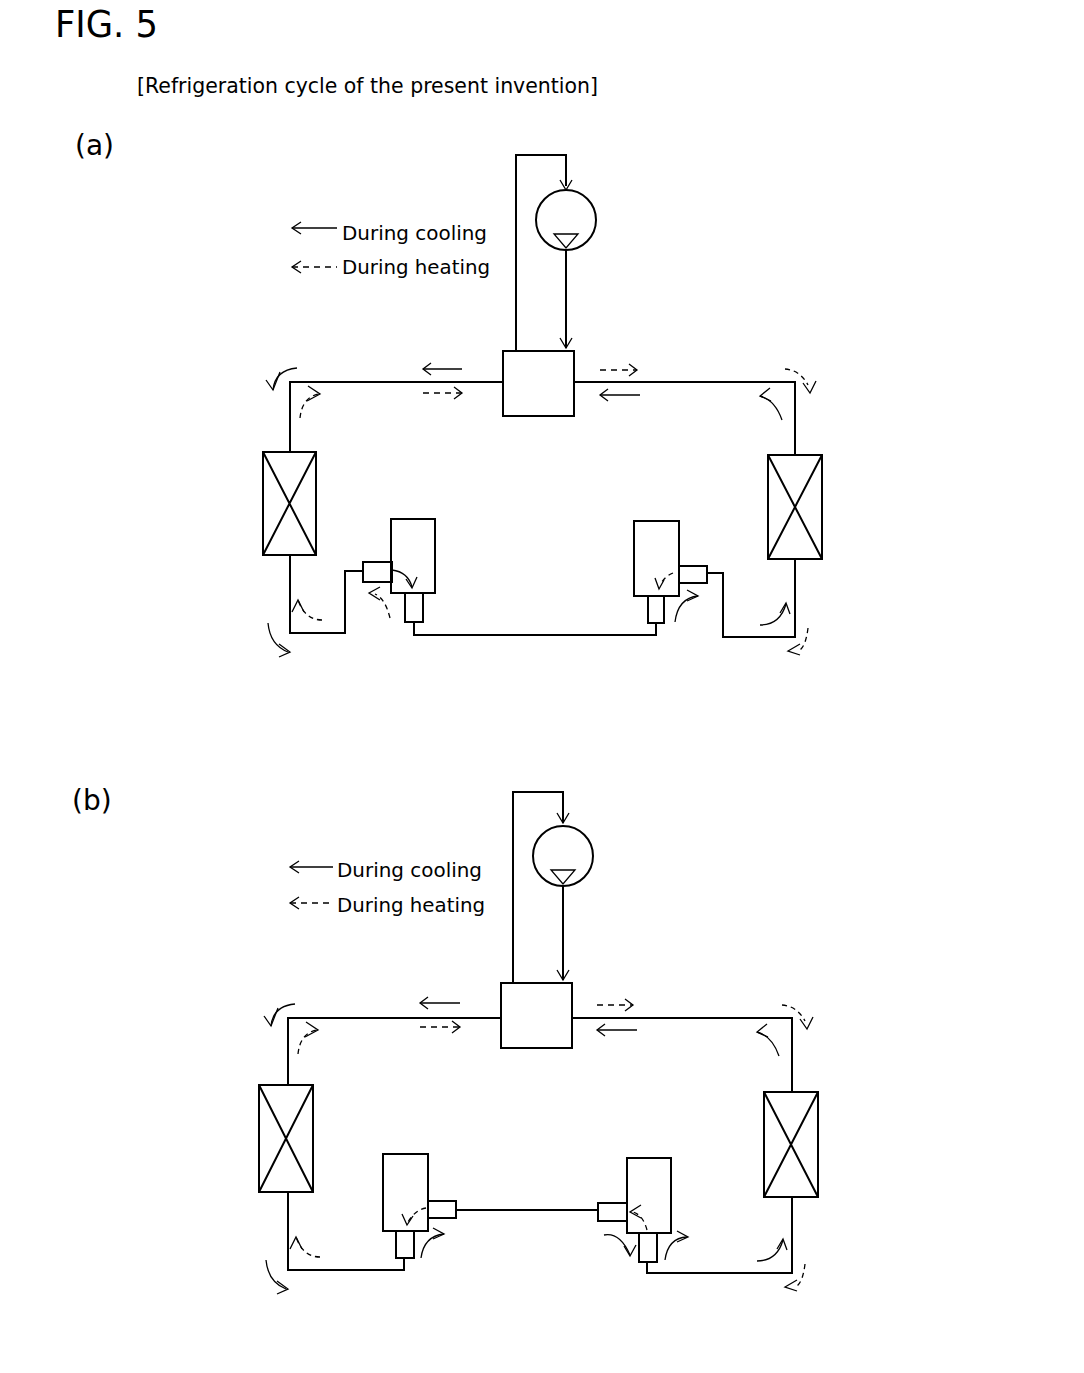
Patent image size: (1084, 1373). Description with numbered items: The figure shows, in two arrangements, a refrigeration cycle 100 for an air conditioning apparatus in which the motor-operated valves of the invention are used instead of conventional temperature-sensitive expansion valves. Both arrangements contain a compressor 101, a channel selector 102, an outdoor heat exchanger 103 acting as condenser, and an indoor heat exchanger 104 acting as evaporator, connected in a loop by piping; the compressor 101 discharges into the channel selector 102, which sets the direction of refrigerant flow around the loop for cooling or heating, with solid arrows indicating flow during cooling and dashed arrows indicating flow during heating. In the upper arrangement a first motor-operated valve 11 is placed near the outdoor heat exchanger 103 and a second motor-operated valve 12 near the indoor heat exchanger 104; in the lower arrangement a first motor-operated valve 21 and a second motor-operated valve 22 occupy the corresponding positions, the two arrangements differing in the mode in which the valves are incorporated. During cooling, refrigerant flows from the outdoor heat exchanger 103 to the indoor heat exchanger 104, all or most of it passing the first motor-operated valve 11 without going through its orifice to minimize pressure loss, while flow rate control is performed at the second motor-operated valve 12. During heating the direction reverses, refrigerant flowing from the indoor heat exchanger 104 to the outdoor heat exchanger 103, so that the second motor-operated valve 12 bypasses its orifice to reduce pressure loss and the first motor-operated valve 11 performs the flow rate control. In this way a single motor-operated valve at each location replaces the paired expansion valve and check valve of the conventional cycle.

The refrigeration cycle 100 is at (792, 307).
The compressor 101 is at (596, 216).
The channel selector 102 is at (572, 994).
The outdoor heat exchanger 103 is at (270, 1085).
The indoor heat exchanger 104 is at (817, 1092).
The first motor-operated valve 11 is at (412, 519).
The second motor-operated valve 12 is at (660, 521).
The first motor-operated valve 21 is at (408, 1154).
The second motor-operated valve 22 is at (655, 1158).